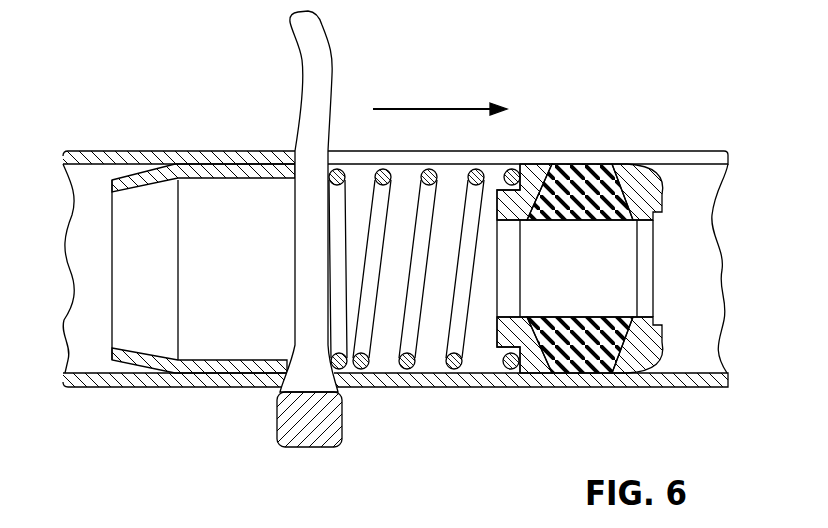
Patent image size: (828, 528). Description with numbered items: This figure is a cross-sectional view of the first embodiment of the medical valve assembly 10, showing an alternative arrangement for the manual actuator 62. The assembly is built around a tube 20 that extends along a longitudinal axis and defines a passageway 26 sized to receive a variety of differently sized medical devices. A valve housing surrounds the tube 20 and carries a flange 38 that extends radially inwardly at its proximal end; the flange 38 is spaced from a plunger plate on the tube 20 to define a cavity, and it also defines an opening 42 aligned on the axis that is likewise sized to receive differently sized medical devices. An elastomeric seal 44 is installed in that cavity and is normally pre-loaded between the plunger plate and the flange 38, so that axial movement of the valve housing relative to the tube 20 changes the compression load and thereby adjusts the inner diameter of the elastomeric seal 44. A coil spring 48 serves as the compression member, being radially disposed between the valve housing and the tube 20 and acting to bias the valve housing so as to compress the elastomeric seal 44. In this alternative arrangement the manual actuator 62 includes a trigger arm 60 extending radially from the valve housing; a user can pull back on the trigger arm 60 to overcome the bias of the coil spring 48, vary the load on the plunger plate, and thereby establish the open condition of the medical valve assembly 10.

The medical valve assembly 10 is at (112, 94).
The tube 20 is at (240, 172).
The passageway 26 is at (619, 251).
The flange 38 is at (663, 186).
The opening 42 is at (641, 218).
The elastomeric seal 44 is at (582, 198).
The coil spring 48 is at (365, 334).
The trigger arm 60 is at (333, 67).
The manual actuator 62 is at (291, 446).